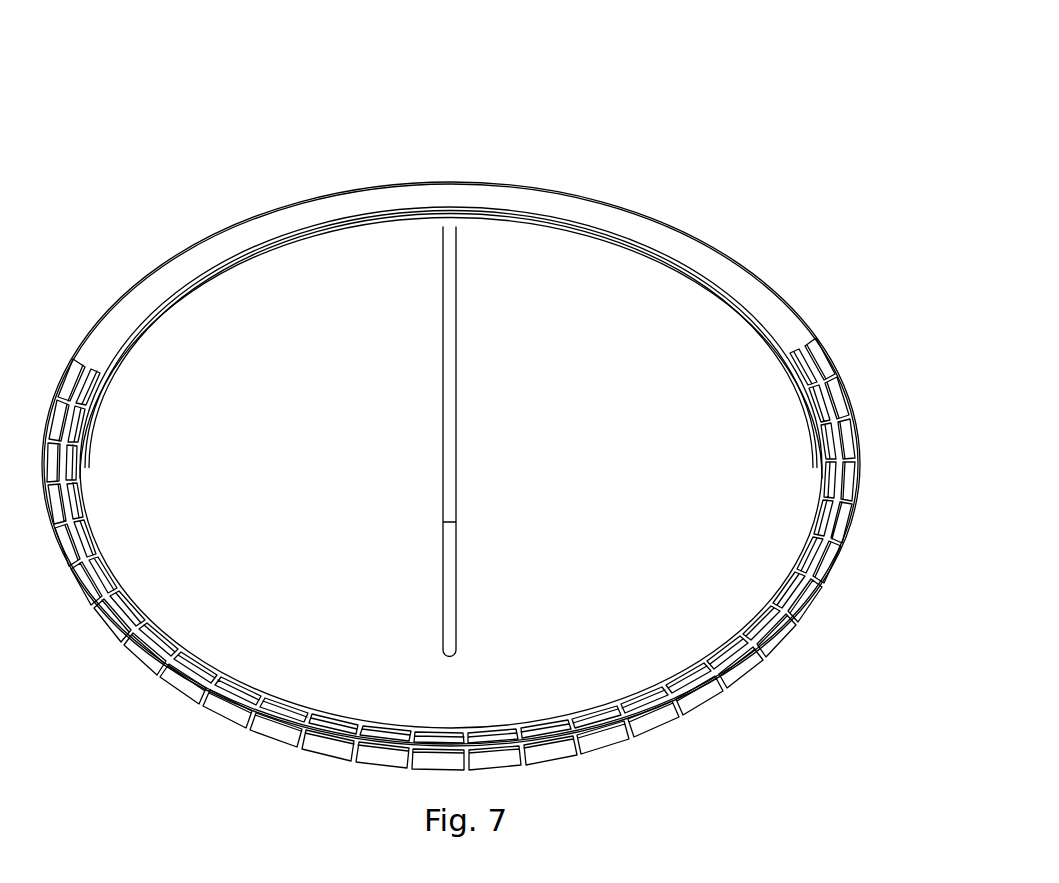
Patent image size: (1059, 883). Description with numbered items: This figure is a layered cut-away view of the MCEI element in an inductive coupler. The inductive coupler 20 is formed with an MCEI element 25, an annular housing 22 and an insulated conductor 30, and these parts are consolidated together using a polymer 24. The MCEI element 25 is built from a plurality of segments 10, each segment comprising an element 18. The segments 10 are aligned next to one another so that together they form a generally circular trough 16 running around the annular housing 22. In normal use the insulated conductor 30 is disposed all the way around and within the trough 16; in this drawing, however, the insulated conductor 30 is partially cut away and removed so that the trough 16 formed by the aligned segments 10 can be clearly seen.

The segment 10 is at (451, 458).
The trough 16 is at (825, 540).
The element 18 is at (685, 719).
The inductive coupler 20 is at (615, 80).
The annular housing 22 is at (358, 228).
The polymer 24 is at (248, 238).
The MCEI element 25 is at (270, 732).
The insulated conductor 30 is at (90, 370).